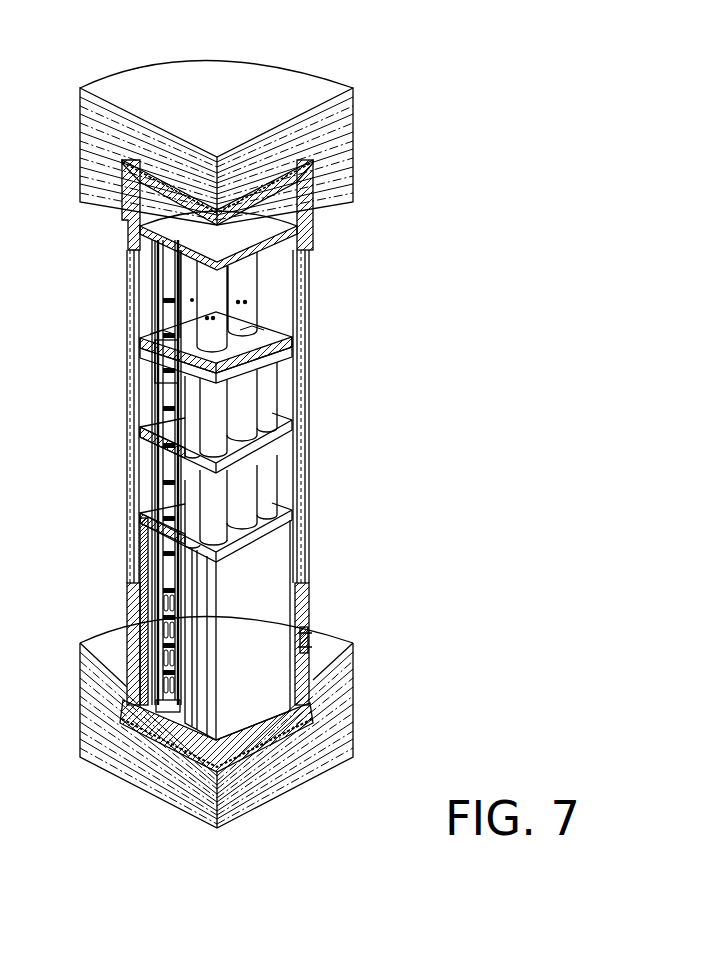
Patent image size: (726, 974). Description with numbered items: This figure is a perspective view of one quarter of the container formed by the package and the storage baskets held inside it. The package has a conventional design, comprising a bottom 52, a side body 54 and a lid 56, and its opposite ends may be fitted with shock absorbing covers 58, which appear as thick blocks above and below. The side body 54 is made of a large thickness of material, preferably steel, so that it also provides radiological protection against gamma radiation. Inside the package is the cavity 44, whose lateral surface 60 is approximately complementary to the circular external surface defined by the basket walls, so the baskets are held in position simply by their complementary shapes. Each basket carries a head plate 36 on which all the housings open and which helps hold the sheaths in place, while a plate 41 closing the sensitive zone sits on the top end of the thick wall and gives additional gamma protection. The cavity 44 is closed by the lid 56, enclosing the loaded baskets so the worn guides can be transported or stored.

The shock absorbing covers 58 is at (317, 88).
The side body 54 is at (135, 397).
The lid 56 is at (263, 228).
The head plate 36 is at (292, 342).
The lateral surface 60 is at (296, 447).
The cavity 44 is at (286, 467).
The plate 41 is at (233, 535).
The bottom 52 is at (170, 705).